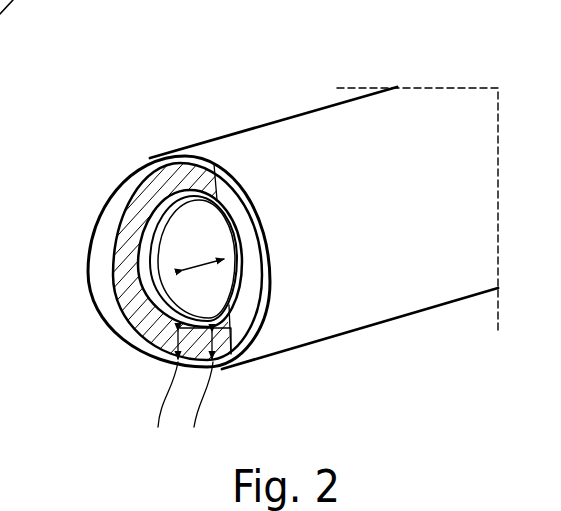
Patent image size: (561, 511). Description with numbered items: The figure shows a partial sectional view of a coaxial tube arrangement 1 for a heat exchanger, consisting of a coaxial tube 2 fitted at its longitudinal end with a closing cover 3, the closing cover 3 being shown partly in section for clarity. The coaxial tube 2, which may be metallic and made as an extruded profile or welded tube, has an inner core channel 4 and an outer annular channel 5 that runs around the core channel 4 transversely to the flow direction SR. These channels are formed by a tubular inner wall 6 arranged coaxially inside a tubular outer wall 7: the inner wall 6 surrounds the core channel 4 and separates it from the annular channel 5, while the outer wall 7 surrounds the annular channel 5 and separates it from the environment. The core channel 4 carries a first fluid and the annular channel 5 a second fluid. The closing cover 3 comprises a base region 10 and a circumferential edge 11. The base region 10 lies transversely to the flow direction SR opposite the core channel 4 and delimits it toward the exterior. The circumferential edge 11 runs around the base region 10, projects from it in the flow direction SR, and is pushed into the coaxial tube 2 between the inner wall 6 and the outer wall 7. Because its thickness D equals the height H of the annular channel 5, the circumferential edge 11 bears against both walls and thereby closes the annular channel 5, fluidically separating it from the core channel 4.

The coaxial tube arrangement 1 is at (268, 73).
The coaxial tube 2 is at (331, 93).
The closing cover 3 is at (139, 266).
The core channel 4 is at (182, 220).
The annular channel 5 is at (231, 214).
The inner wall 6 is at (247, 331).
The outer wall 7 is at (340, 336).
The base region 10 is at (106, 318).
The circumferential edge 11 is at (107, 187).